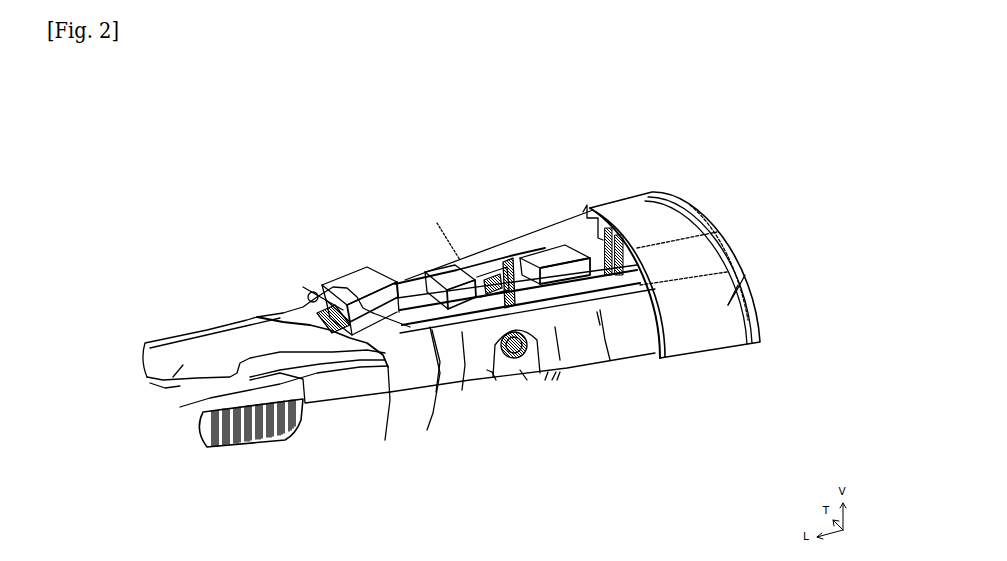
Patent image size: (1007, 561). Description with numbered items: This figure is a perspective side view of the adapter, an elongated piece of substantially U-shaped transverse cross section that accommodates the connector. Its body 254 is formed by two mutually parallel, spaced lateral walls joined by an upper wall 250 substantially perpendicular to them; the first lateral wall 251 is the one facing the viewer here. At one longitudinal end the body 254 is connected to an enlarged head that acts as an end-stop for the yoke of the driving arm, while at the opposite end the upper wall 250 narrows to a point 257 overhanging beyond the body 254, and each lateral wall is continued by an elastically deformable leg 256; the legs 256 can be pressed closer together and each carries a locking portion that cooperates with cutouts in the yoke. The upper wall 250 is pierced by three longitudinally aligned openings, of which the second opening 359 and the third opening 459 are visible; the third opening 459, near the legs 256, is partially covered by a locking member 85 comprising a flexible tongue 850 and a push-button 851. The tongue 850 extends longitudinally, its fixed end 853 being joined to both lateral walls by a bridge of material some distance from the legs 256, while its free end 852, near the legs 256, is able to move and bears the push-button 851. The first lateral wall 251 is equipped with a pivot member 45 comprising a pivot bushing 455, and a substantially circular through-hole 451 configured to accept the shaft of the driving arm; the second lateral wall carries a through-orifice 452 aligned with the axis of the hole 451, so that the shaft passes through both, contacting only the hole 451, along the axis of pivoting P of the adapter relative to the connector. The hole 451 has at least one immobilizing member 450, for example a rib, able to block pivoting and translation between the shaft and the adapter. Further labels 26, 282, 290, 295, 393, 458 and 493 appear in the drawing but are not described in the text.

The seat assembly 26 is at (125, 178).
The locking member 85 is at (317, 267).
The upper wall 250 is at (557, 255).
The first lateral wall 251 is at (600, 392).
The body 254 is at (597, 312).
The elastically deformable leg 256 is at (335, 388).
The point 257 is at (270, 303).
The slot 282 is at (483, 270).
The cap 290 is at (625, 235).
The cap inner wall 295 is at (728, 305).
The second opening 359 is at (530, 263).
The grip 393 is at (190, 400).
The pivot member 45 is at (497, 368).
The immobilizing member 450 is at (557, 380).
The through-hole 451 is at (520, 370).
The through-orifice 452 is at (497, 263).
The pivot bushing 455 is at (492, 372).
The tab 458 is at (150, 383).
The third opening 459 is at (385, 440).
The spring 493 is at (552, 380).
The flexible tongue 850 is at (397, 267).
The push-button 851 is at (360, 273).
The free end 852 is at (433, 413).
The fixed end 853 is at (487, 370).
The axis of pivoting P is at (545, 380).